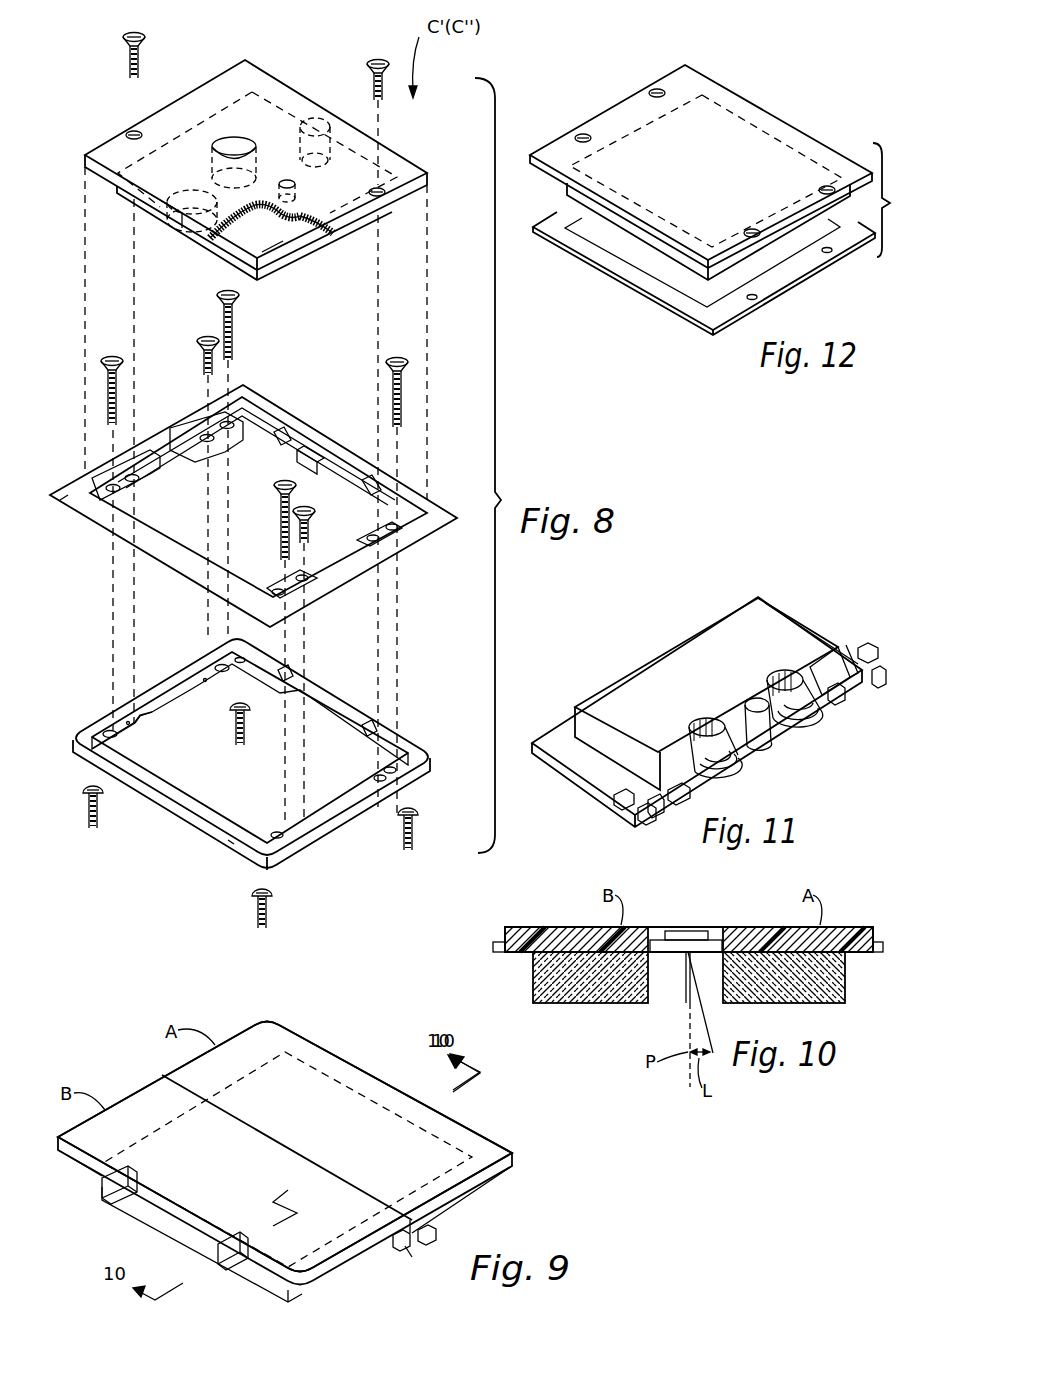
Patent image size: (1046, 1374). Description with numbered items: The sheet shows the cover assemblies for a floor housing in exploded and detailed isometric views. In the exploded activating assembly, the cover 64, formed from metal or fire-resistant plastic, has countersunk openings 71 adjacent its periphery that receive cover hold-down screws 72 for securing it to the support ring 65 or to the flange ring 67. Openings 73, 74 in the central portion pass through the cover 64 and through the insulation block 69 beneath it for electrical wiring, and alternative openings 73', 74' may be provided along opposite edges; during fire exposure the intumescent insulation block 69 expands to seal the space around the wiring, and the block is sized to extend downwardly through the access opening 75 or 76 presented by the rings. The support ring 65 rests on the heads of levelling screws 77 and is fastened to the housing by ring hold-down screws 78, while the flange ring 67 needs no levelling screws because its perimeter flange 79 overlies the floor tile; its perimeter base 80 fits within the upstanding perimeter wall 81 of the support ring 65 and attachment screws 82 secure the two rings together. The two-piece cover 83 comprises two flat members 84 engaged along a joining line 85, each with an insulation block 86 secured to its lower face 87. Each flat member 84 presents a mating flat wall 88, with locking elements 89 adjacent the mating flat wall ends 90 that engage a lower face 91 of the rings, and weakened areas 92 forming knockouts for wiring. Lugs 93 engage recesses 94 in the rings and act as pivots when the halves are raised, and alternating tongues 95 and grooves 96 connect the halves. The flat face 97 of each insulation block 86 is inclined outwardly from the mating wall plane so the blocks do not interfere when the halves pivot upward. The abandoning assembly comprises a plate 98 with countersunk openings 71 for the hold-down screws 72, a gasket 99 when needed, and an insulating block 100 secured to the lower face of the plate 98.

In FIG. 8, the cover 64 is at (253, 72).
In FIG. 8, the support ring 65 is at (228, 841).
In FIG. 8, the flange ring 67 is at (100, 535).
In FIG. 8, the insulation block 69 is at (283, 254).
In FIG. 8, the countersunk openings 71 is at (128, 133).
In FIG. 12, the countersunk openings 71 is at (653, 92).
In FIG. 8, the cover hold-down screws 72 is at (146, 46).
In FIG. 8, the opening 73 is at (207, 162).
In FIG. 8, the opening 73' is at (153, 214).
In FIG. 8, the opening 74 is at (307, 186).
In FIG. 8, the opening 74' is at (283, 137).
In FIG. 8, the access opening 75 is at (311, 735).
In FIG. 8, the access opening 76 is at (251, 466).
In FIG. 8, the levelling screws 77 is at (102, 812).
In FIG. 8, the ring hold-down screws 78 is at (217, 295).
In FIG. 8, the perimeter flange 79 is at (405, 540).
In FIG. 8, the perimeter base 80 is at (308, 468).
In FIG. 8, the upstanding perimeter wall 81 is at (412, 745).
In FIG. 8, the attachment screws 82 is at (200, 343).
In FIG. 10, the cover 83 is at (759, 903).
In FIG. 9, the cover 83 is at (366, 1043).
In FIG. 10, the flat members 84 is at (573, 927).
In FIG. 9, the flat members 84 is at (156, 1084).
In FIG. 10, the joining line 85 is at (688, 940).
In FIG. 9, the joining line 85 is at (286, 1150).
In FIG. 11, the insulation block 86 is at (680, 657).
In FIG. 10, the insulation block 86 is at (600, 1003).
In FIG. 9, the insulation block 86 is at (474, 1200).
In FIG. 10, the lower face 87 is at (515, 955).
In FIG. 9, the lower face 87 is at (505, 1184).
In FIG. 11, the mating flat wall 88 is at (818, 714).
In FIG. 11, the locking elements 89 is at (870, 645).
In FIG. 9, the locking elements 89 is at (405, 1250).
In FIG. 11, the mating flat wall ends 90 is at (884, 684).
In FIG. 8, the lower face 91 is at (163, 462).
In FIG. 11, the weakened areas 92 is at (785, 730).
In FIG. 10, the lugs 93 is at (493, 947).
In FIG. 9, the lugs 93 is at (130, 1186).
In FIG. 8, the recesses 94 is at (288, 435).
In FIG. 11, the tongues 95 is at (690, 796).
In FIG. 11, the grooves 96 is at (660, 808).
In FIG. 11, the flat face 97 is at (823, 668).
In FIG. 10, the flat face 97 is at (685, 995).
In FIG. 12, the plate 98 is at (757, 108).
In FIG. 12, the gasket 99 is at (790, 280).
In FIG. 12, the insulating block 100 is at (657, 250).